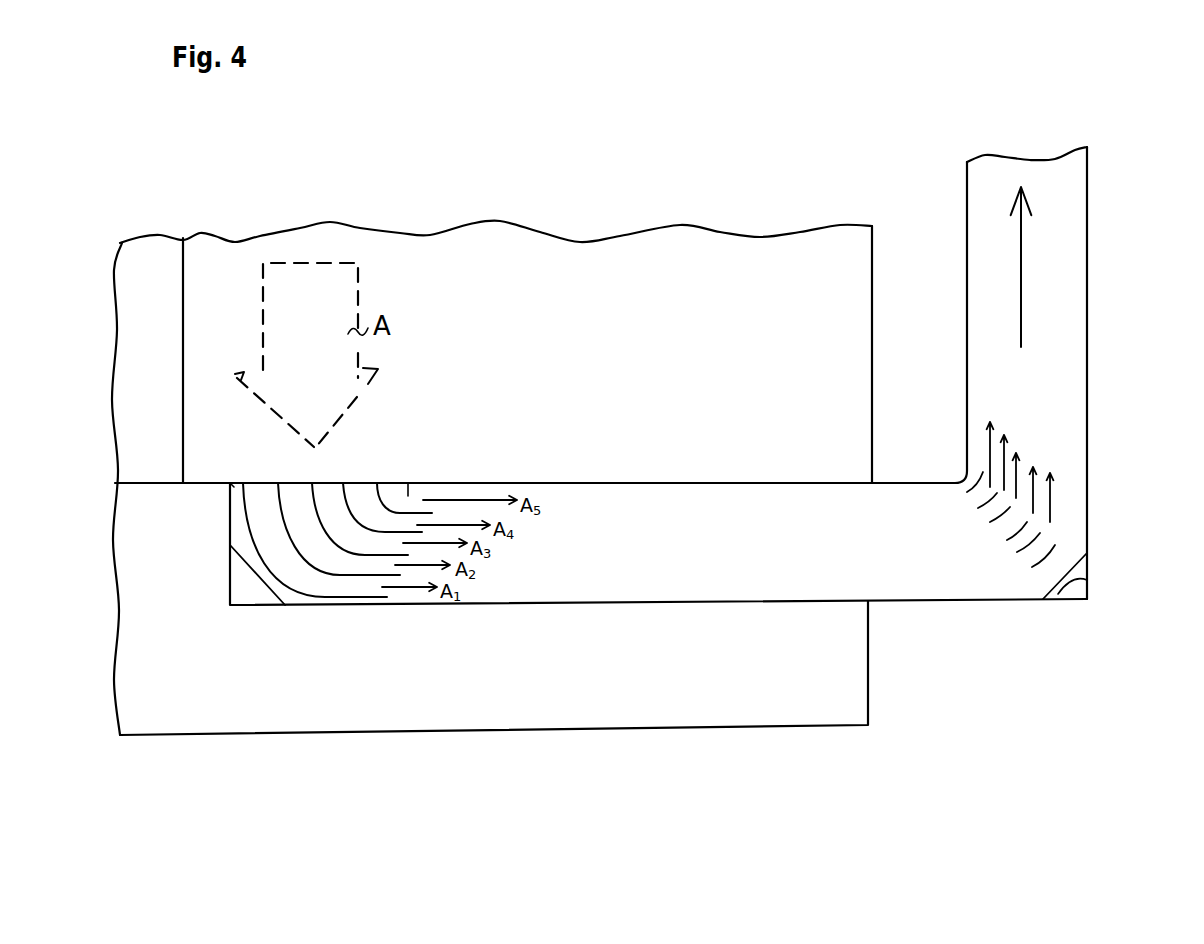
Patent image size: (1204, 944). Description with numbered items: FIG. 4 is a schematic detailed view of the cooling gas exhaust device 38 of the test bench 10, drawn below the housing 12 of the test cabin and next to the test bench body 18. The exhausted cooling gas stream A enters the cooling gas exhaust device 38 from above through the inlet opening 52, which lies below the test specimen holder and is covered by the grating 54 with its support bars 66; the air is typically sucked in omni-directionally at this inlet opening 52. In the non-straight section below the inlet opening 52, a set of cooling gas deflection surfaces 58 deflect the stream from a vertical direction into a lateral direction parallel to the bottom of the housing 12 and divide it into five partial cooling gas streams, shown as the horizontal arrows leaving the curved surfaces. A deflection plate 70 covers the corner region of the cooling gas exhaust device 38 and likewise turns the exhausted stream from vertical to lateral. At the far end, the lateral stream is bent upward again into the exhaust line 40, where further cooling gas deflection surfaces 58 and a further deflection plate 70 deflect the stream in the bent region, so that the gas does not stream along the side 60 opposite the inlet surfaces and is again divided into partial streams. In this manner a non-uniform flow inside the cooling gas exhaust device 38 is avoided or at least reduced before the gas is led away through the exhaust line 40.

The test bench 10 is at (828, 106).
The housing 12 is at (718, 364).
The test bench body 18 is at (172, 370).
The cooling gas exhaust device 38 is at (941, 642).
The exhaust line 40 is at (1087, 213).
The inlet opening 52 is at (357, 449).
The grating 54 is at (409, 469).
The cooling gas deflection surfaces 58 is at (330, 597).
The side 60 is at (416, 618).
The support bars 66 is at (238, 486).
The deflection plate 70 is at (262, 583).